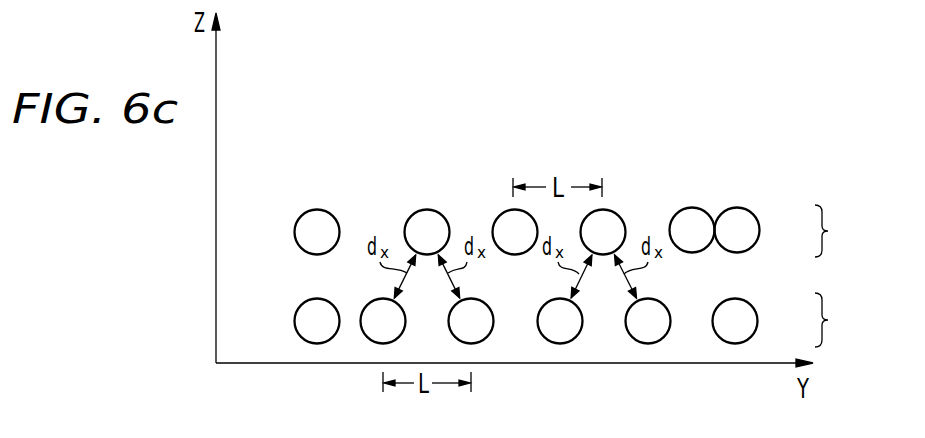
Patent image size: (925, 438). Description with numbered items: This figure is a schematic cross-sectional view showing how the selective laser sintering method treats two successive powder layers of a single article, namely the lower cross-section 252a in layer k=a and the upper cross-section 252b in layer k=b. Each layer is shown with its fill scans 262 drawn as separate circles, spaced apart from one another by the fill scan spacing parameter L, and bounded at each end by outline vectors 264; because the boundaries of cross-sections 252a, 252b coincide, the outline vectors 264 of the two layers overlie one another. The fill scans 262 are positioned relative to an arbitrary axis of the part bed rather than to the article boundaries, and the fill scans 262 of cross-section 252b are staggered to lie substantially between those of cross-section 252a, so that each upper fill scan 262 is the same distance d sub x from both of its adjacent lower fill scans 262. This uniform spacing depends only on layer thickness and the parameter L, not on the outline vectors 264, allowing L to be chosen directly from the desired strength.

The fill scans 262 is at (423, 210).
The outline vectors 264 is at (294, 232).
The cross-section of lower layer k=a 252a is at (768, 320).
The cross-section of upper layer k=b 252b is at (778, 230).